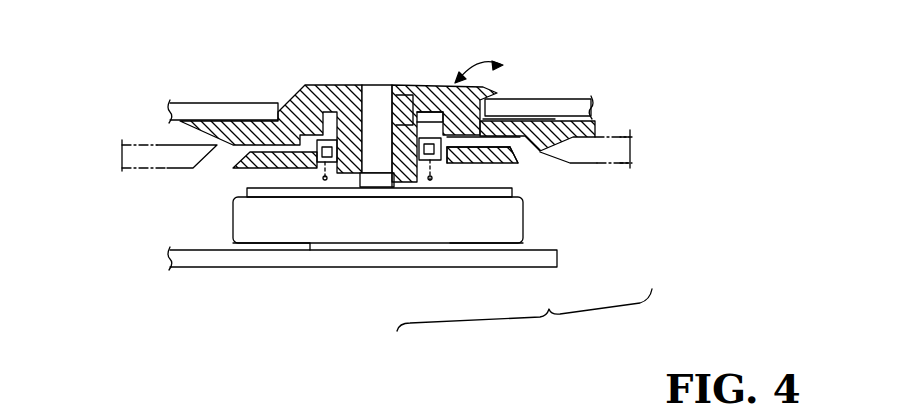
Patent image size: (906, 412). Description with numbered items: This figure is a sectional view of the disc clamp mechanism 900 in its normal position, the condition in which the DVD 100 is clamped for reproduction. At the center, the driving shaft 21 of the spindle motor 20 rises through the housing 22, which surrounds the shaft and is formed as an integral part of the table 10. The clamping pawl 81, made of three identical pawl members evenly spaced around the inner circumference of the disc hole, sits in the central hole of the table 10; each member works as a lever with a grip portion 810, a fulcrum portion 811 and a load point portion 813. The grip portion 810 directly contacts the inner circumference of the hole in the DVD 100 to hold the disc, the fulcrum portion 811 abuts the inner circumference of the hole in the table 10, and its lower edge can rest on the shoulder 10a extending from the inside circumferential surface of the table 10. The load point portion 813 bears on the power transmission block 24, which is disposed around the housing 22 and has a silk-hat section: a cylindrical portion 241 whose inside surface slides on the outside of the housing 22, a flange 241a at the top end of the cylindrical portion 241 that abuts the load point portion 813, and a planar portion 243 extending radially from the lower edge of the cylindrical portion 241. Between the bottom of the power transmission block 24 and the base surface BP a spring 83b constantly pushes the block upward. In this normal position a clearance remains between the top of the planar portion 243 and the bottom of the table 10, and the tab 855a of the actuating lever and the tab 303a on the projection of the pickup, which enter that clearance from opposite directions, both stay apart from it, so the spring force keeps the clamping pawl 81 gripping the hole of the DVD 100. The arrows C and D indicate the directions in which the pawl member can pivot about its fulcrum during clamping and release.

The disc clamp mechanism 900 is at (289, 87).
The DVD 100 is at (230, 107).
The driving shaft 21 is at (383, 97).
The load point portion 813 is at (400, 110).
The clamping pawl 81 is at (497, 85).
The grip portion 810 is at (517, 100).
The fulcrum portion 811 is at (500, 125).
The table 10 is at (580, 131).
The shoulder 10a is at (520, 163).
The tab 855a is at (620, 168).
The tab 303a is at (147, 145).
The spring 83b is at (320, 175).
The housing 22 is at (445, 142).
The spindle motor 20 is at (250, 237).
The base surface BP is at (288, 258).
The cylindrical portion 241 is at (390, 176).
The flange 241a is at (455, 151).
The planar portion 243 is at (523, 165).
The power transmission block 24 is at (524, 323).
The rotation direction C is at (468, 66).
The rotation direction D is at (504, 52).